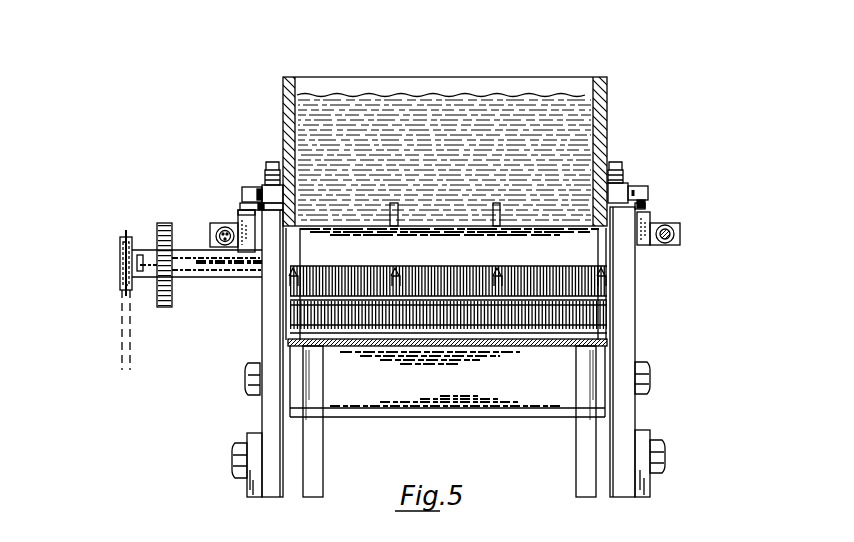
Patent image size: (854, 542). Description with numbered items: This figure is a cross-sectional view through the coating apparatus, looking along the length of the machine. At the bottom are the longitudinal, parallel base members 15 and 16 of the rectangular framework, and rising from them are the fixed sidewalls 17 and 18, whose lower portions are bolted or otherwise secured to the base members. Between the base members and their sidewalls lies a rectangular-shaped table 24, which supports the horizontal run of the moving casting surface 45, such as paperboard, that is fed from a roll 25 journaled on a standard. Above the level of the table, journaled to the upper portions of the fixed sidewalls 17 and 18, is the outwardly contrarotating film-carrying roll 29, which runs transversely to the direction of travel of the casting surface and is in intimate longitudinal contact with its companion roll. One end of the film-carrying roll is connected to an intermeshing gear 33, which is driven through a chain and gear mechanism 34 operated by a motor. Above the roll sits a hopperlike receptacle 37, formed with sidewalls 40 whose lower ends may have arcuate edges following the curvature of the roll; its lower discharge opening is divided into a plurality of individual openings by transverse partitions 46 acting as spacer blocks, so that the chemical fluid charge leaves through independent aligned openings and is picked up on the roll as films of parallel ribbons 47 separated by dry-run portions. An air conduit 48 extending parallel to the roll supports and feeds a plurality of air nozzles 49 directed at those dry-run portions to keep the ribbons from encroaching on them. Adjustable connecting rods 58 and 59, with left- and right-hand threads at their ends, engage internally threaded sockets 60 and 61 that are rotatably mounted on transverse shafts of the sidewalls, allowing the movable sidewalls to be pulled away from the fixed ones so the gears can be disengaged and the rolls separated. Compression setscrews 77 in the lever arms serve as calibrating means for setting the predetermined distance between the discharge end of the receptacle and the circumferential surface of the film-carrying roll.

The base member 15 is at (250, 440).
The base member 16 is at (645, 437).
The fixed sidewall 17 is at (270, 347).
The fixed sidewall 18 is at (622, 353).
The rectangular-shaped table 24 is at (342, 347).
The roll 25 is at (545, 383).
The contrarotating film-carrying roll 29 is at (448, 268).
The intermeshing gear 33 is at (125, 237).
The chain and gear mechanism 34 is at (122, 290).
The receptacle 37 is at (340, 130).
The sidewall of receptacle 40 is at (603, 120).
The casting surface 45 is at (612, 340).
The transverse partition 46 is at (498, 203).
The film of parallel ribbons 47 is at (612, 268).
The air conduit 48 is at (612, 302).
The air nozzle 49 is at (297, 272).
The adjustable connecting rod 58 is at (210, 236).
The adjustable connecting rod 59 is at (685, 240).
The internally threaded socket 60 is at (213, 225).
The internally threaded socket 61 is at (680, 226).
The compression setscrew 77 is at (265, 168).